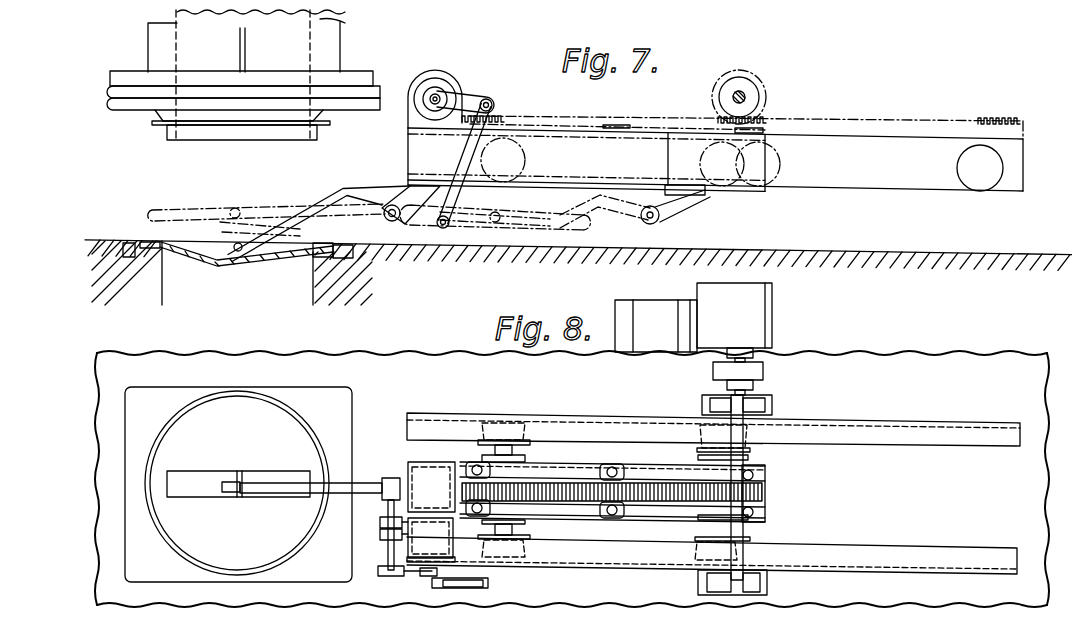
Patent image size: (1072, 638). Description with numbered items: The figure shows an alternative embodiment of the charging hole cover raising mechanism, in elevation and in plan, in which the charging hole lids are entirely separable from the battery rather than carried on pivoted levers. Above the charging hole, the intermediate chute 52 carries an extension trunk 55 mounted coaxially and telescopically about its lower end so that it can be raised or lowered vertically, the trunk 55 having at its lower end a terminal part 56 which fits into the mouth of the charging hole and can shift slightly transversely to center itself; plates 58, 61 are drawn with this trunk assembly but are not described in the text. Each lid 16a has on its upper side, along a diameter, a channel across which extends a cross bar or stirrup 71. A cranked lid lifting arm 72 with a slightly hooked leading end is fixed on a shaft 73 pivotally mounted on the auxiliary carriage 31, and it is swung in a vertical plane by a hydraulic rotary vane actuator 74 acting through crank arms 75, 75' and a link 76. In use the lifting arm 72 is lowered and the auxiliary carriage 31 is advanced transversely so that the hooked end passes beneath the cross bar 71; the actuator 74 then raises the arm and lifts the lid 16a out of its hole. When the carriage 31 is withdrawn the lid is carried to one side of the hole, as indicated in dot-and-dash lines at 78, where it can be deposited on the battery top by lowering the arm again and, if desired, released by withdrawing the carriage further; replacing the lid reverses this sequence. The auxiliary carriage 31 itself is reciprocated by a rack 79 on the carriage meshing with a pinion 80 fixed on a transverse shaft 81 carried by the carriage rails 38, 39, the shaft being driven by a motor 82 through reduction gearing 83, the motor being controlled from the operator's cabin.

In FIG. 7, the lid 16a is at (578, 272).
In FIG. 8, the lid 16a is at (251, 548).
In FIG. 7, the auxiliary carriage 31 is at (770, 168).
In FIG. 8, the auxiliary carriage 31 is at (585, 523).
In FIG. 7, the rail 38 is at (1023, 170).
In FIG. 8, the rail 38 is at (647, 558).
In FIG. 8, the rail 39 is at (618, 428).
In FIG. 7, the intermediate chute 52 is at (348, 35).
In FIG. 7, the extension trunk 55 is at (150, 46).
In FIG. 7, the terminal part 56 is at (277, 134).
In FIG. 7, the lower plate 58 is at (140, 108).
In FIG. 7, the upper plate 61 is at (110, 76).
In FIG. 7, the cross bar 71 is at (228, 262).
In FIG. 8, the cross bar 71 is at (240, 478).
In FIG. 7, the lid lifting arm 72 is at (305, 257).
In FIG. 8, the lid lifting arm 72 is at (355, 487).
In FIG. 7, the shaft 73 is at (392, 222).
In FIG. 8, the shaft 73 is at (388, 552).
In FIG. 7, the hydraulic rotary vane actuator 74 is at (447, 90).
In FIG. 8, the hydraulic rotary vane actuator 74 is at (381, 531).
In FIG. 7, the crank arm 75 is at (476, 98).
In FIG. 8, the crank arm 75 is at (483, 533).
In FIG. 7, the crank arm 75' is at (433, 252).
In FIG. 8, the crank arm 75' is at (405, 585).
In FIG. 7, the link 76 is at (469, 161).
In FIG. 8, the link 76 is at (487, 588).
In FIG. 7, the lid position 78 is at (565, 232).
In FIG. 7, the rack 79 is at (575, 119).
In FIG. 8, the rack 79 is at (535, 480).
In FIG. 7, the pinion 80 is at (761, 114).
In FIG. 8, the pinion 80 is at (760, 496).
In FIG. 7, the transverse shaft 81 is at (746, 100).
In FIG. 8, the transverse shaft 81 is at (740, 530).
In FIG. 8, the motor 82 is at (663, 343).
In FIG. 8, the reduction gearing 83 is at (741, 328).